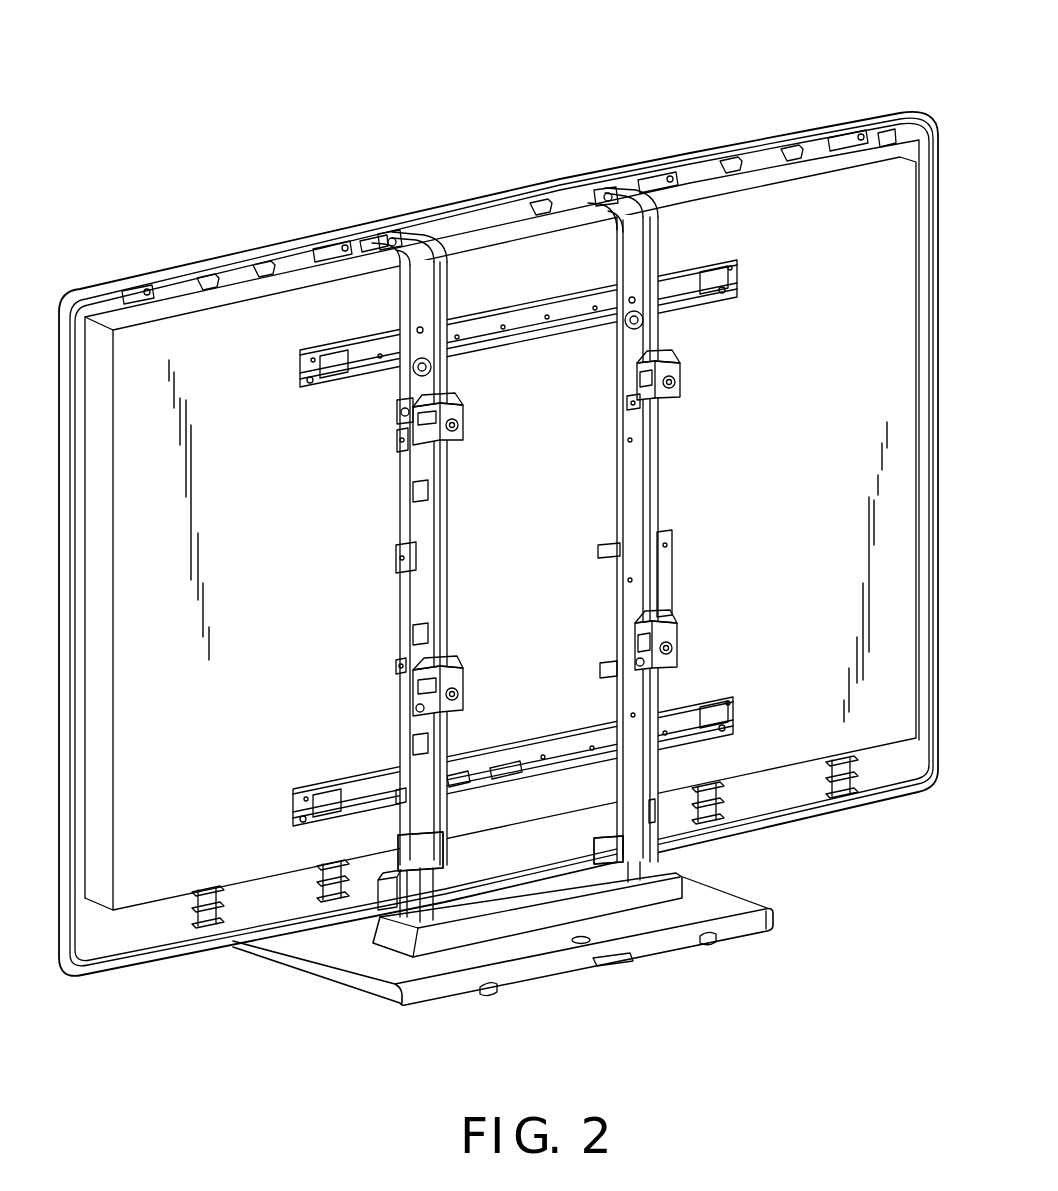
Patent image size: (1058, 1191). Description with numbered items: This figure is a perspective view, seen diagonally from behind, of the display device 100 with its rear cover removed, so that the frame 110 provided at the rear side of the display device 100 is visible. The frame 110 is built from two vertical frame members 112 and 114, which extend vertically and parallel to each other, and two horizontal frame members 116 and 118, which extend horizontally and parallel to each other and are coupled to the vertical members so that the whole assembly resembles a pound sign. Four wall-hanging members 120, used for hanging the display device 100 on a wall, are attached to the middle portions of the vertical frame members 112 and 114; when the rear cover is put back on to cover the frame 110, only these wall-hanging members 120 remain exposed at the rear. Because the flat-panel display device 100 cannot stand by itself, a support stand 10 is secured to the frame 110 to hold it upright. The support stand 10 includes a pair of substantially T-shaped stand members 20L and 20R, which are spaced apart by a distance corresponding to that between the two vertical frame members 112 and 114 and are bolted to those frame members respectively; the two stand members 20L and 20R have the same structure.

The display device 100 is at (855, 80).
The support stand 10 is at (815, 903).
The frame 110 is at (712, 445).
The vertical frame member 112 is at (400, 592).
The vertical frame member 114 is at (658, 500).
The horizontal frame member 116 is at (507, 308).
The horizontal frame member 118 is at (510, 745).
The wall-hanging member 120 is at (680, 377).
The stand member 20L is at (417, 837).
The stand member 20R is at (656, 782).